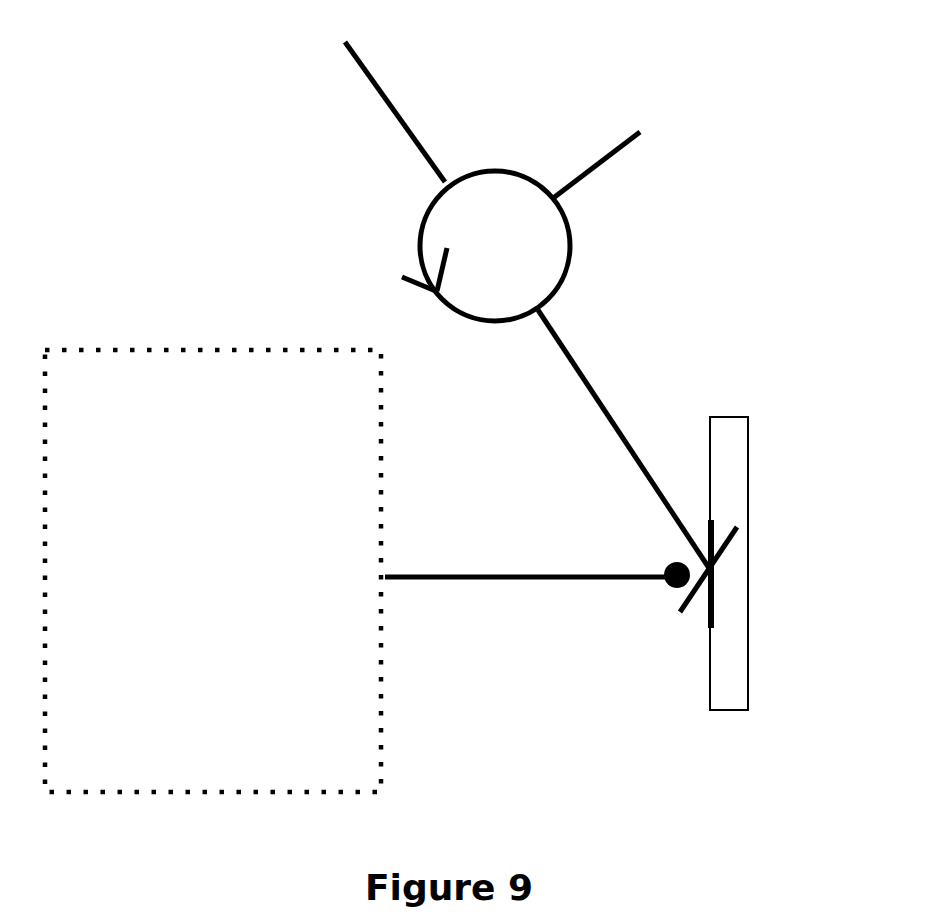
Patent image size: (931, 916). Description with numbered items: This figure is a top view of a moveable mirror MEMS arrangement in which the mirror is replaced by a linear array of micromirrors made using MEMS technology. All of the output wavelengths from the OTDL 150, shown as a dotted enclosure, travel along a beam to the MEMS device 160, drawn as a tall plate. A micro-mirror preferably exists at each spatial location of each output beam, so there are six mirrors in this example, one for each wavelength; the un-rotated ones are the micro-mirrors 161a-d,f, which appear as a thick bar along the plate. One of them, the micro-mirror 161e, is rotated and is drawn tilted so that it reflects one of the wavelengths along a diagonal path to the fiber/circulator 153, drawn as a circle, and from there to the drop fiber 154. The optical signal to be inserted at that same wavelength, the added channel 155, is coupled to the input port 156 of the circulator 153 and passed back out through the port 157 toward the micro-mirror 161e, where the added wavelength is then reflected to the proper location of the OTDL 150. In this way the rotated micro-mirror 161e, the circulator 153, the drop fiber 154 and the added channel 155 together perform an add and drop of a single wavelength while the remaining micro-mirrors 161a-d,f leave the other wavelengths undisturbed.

The OTDL 150 is at (218, 601).
The fiber/circulator 153 is at (521, 327).
The drop fiber 154 is at (585, 170).
The added channel 155 is at (371, 78).
The input port 156 is at (444, 182).
The port junction / beam to plate 157 is at (558, 201).
The MEMS device 160 is at (730, 416).
The micro-mirrors 161a-d,f is at (708, 622).
The micro-mirror 161e is at (733, 530).